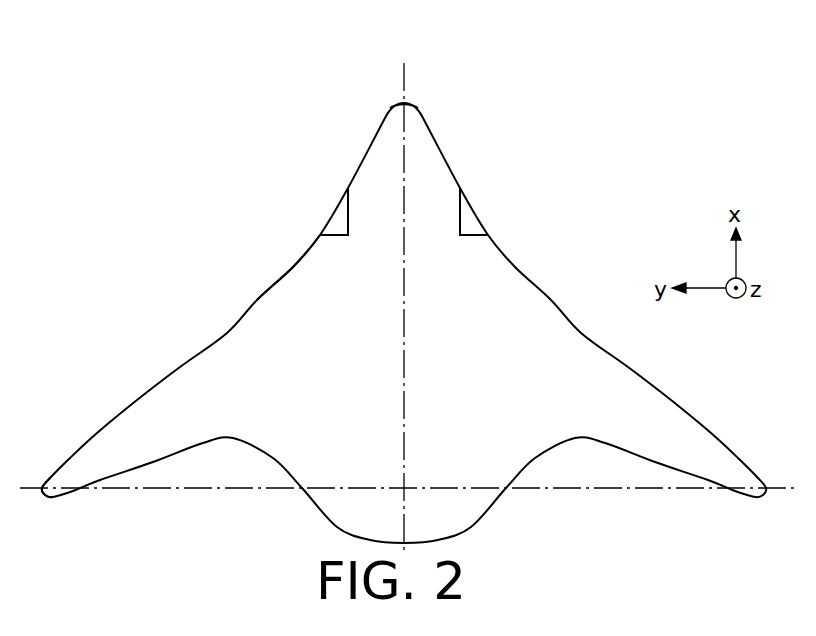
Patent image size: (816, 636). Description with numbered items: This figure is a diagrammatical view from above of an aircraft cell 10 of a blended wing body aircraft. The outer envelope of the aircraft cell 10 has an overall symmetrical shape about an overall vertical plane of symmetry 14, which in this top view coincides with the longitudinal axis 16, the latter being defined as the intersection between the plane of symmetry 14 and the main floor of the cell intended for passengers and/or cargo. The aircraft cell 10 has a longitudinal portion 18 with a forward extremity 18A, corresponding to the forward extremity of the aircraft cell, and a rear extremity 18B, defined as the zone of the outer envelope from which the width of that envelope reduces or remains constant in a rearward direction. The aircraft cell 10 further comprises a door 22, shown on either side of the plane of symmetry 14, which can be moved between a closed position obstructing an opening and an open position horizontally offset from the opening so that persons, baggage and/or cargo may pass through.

The aircraft cell 10 is at (294, 140).
The overall vertical plane of symmetry 14 is at (407, 308).
The longitudinal axis 16 is at (404, 68).
The longitudinal portion 18 is at (313, 283).
The forward extremity 18A is at (404, 103).
The rear extremity 18B is at (42, 489).
The door 22 is at (335, 220).